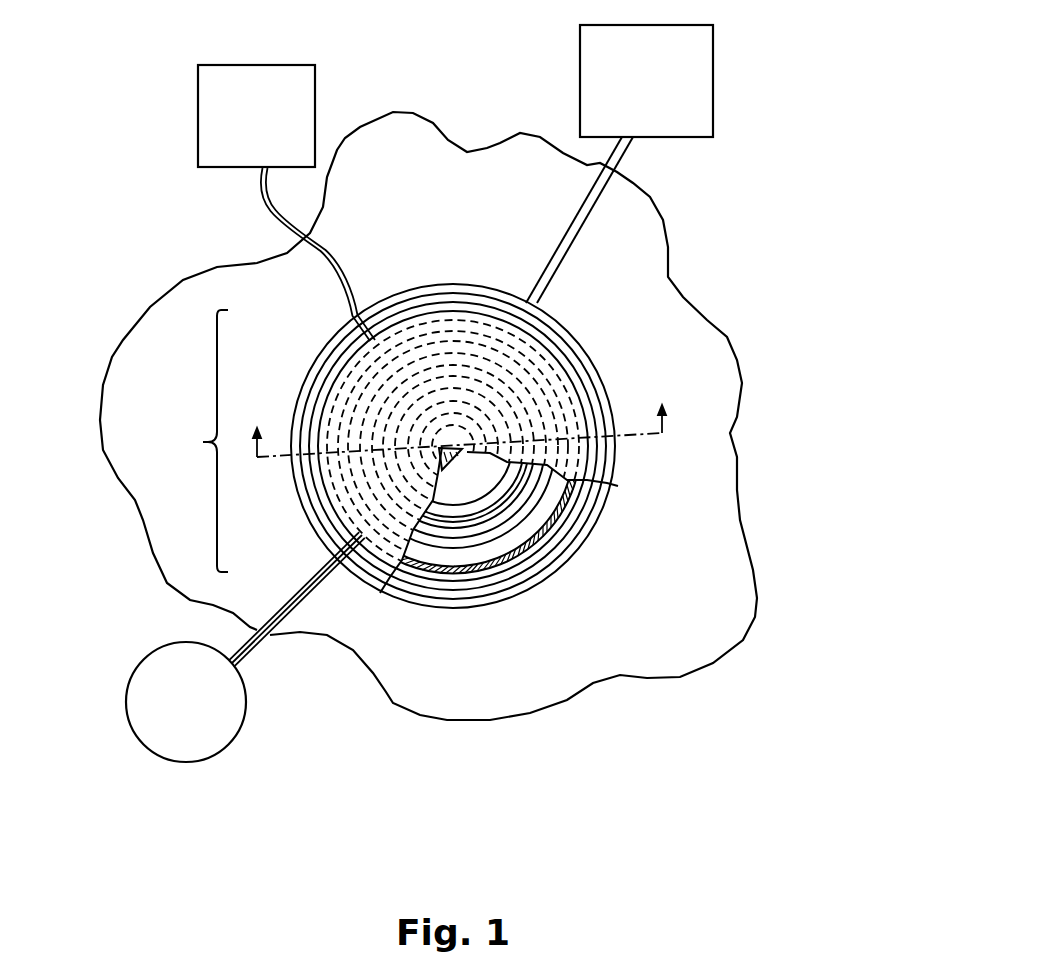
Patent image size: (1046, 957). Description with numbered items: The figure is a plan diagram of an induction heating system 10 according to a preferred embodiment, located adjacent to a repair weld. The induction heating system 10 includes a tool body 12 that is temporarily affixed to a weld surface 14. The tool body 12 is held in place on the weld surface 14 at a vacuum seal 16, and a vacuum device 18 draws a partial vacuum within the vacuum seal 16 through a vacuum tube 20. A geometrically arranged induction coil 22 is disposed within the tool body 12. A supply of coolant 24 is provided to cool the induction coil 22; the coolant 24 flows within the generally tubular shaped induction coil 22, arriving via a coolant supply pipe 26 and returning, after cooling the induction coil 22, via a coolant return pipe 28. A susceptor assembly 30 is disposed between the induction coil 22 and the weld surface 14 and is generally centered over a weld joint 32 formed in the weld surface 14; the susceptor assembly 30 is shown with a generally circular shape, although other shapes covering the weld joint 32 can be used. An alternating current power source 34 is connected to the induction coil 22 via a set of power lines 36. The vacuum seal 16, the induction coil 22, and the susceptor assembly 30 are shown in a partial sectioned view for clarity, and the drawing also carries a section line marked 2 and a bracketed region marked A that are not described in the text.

The induction heating system 10 is at (311, 740).
The tool body 12 is at (558, 367).
The weld surface 14 is at (417, 147).
The vacuum seal 16 is at (535, 577).
The vacuum device 18 is at (707, 52).
The vacuum tube 20 is at (578, 222).
The induction coil 22 is at (503, 542).
The coolant 24 is at (143, 660).
The coolant supply pipe 26 is at (270, 635).
The coolant return pipe 28 is at (247, 637).
The susceptor assembly 30 is at (477, 548).
The weld joint 32 is at (468, 428).
The alternating current (A/C) power source 34 is at (315, 65).
The power lines 36 is at (270, 215).
The section line 2- 2 is at (459, 422).
The region A is at (204, 441).